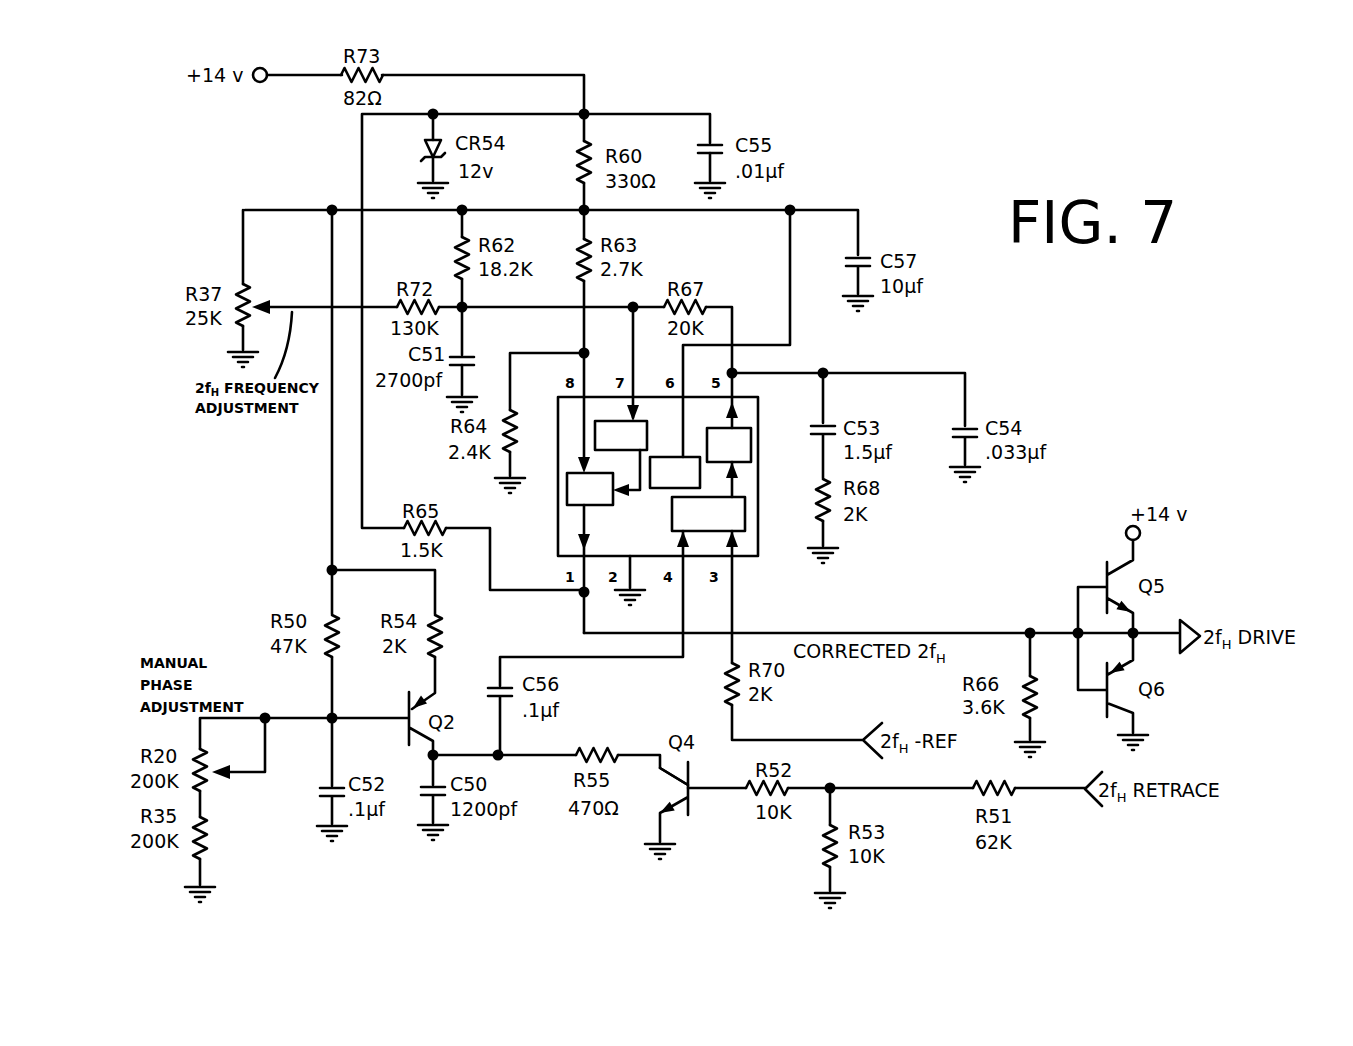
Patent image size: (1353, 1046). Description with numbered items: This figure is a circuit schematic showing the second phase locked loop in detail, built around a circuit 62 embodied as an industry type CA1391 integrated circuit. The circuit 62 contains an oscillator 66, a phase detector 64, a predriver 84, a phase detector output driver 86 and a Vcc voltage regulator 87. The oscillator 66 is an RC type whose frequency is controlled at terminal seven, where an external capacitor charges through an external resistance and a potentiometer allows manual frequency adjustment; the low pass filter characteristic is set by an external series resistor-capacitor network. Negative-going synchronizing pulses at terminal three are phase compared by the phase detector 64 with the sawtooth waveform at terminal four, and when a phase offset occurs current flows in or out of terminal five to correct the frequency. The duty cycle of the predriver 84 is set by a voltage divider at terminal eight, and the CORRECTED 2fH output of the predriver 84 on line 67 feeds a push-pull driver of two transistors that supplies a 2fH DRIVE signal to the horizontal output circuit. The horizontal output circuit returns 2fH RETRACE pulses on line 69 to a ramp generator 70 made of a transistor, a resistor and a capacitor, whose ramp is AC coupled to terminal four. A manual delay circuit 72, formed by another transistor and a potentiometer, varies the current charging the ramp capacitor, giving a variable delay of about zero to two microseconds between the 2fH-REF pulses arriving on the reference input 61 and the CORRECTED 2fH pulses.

The 2fH reference input signal line 61 is at (790, 740).
The circuit 62 is at (677, 493).
The phase comparator 64 is at (672, 505).
The voltage controlled oscillator 66 is at (648, 442).
The line 67 is at (940, 632).
The line 69 is at (1045, 792).
The ramp generator 70 is at (635, 816).
The manual delay circuit 72 is at (258, 810).
The predriver 84 is at (603, 500).
The phase detector output driver 86 is at (729, 445).
The Vcc voltage regulator 87 is at (675, 472).